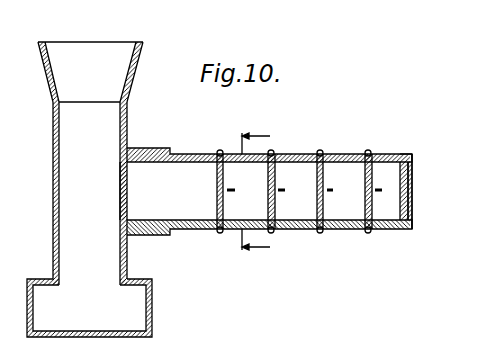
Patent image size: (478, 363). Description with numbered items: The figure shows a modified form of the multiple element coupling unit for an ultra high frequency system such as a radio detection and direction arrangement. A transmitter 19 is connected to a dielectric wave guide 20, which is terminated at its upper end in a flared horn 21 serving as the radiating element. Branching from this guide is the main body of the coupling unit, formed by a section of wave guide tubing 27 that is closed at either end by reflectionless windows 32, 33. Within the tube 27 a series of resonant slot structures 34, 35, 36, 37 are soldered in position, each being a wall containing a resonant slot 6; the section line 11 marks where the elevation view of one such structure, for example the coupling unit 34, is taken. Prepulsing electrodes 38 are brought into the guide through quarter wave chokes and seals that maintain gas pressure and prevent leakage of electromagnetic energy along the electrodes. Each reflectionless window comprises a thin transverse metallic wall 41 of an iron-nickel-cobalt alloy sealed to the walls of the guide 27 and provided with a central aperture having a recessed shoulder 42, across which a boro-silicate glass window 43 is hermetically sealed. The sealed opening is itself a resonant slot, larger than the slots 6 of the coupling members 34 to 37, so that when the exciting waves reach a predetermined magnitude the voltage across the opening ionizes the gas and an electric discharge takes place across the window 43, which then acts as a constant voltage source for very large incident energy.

The slot 6 is at (217, 190).
The section lines 11— 11 is at (248, 191).
The transmitter 19 is at (140, 312).
The dielectric wave guide 20 is at (67, 261).
The flared horn 21 is at (122, 76).
The wave guide tubing 27 is at (190, 154).
The reflectionless window 32 is at (119, 193).
The reflectionless window 33 is at (413, 198).
The resonant slot structure 34 is at (215, 229).
The resonant slot structure 35 is at (273, 229).
The resonant slot structure 36 is at (322, 229).
The resonant slot structure 37 is at (370, 229).
The prepulsing electrode 38 is at (286, 192).
The transverse metallic wall 41 is at (405, 153).
The recessed shoulder 42 is at (408, 173).
The glass window 43 is at (400, 205).